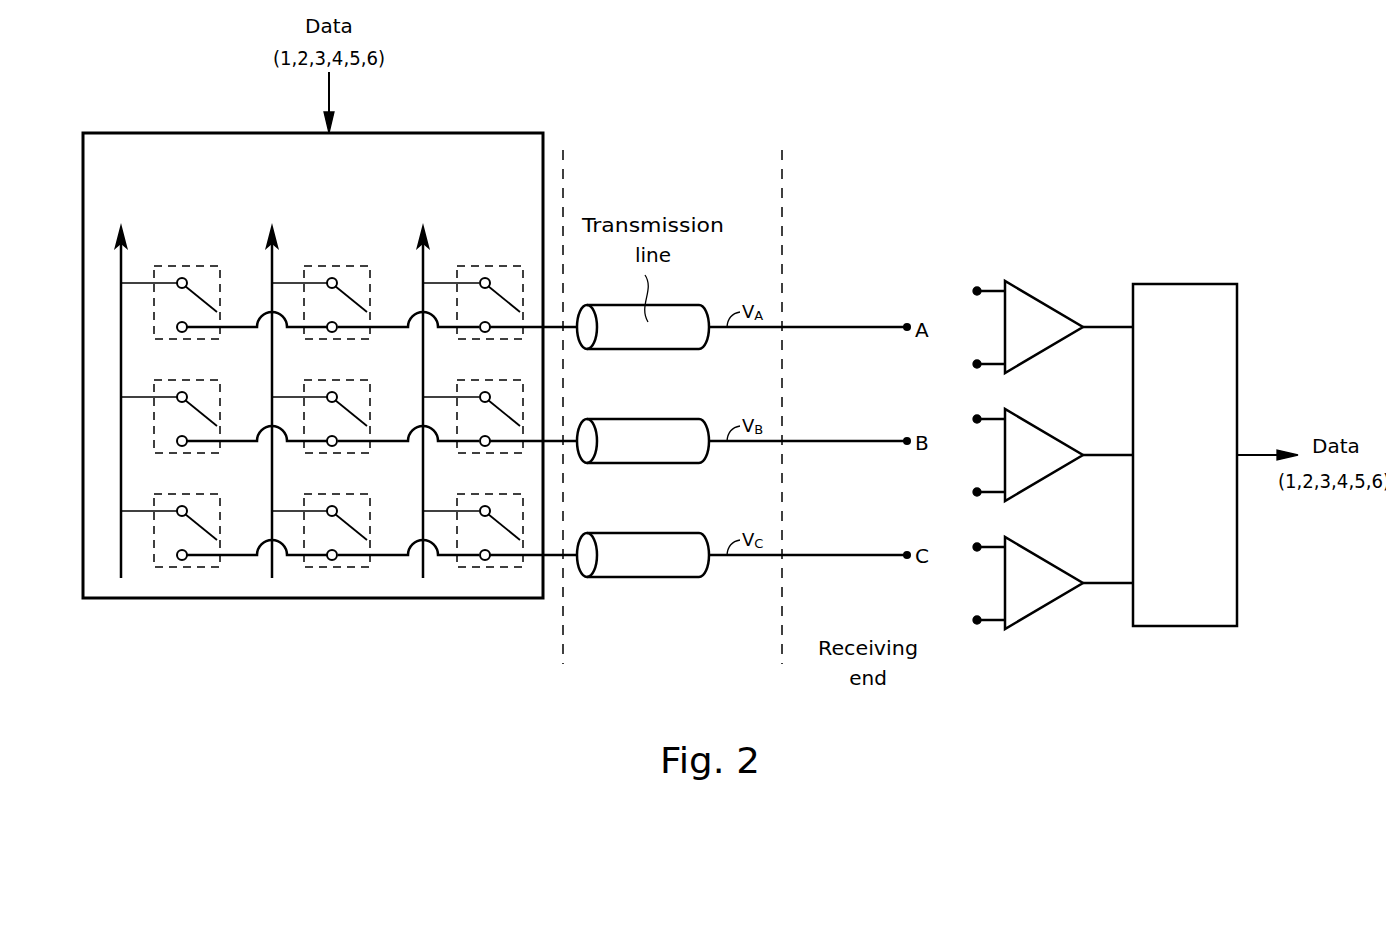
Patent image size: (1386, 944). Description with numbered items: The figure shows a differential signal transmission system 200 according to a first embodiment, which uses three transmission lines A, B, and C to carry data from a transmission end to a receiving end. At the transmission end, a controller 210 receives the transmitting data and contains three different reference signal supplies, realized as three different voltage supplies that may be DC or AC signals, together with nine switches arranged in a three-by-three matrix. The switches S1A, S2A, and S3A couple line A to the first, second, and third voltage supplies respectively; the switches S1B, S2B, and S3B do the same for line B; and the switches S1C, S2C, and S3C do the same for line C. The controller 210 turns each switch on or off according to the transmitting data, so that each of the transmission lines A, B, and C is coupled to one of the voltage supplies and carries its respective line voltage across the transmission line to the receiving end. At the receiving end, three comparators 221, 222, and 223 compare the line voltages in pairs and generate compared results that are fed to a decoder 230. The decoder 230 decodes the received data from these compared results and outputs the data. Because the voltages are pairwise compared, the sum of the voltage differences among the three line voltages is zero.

The differential signal transmission system 200 is at (1163, 152).
The controller 210 is at (505, 133).
The comparator 221 is at (1010, 337).
The comparator 222 is at (1010, 465).
The comparator 223 is at (1010, 593).
The decoder 230 is at (1163, 462).
The switch S1A is at (173, 266).
The switch S2A is at (323, 266).
The switch S3A is at (476, 266).
The switch S1B is at (173, 380).
The switch S2B is at (323, 380).
The switch S3B is at (476, 380).
The switch S1C is at (173, 494).
The switch S2C is at (323, 494).
The switch S3C is at (476, 494).